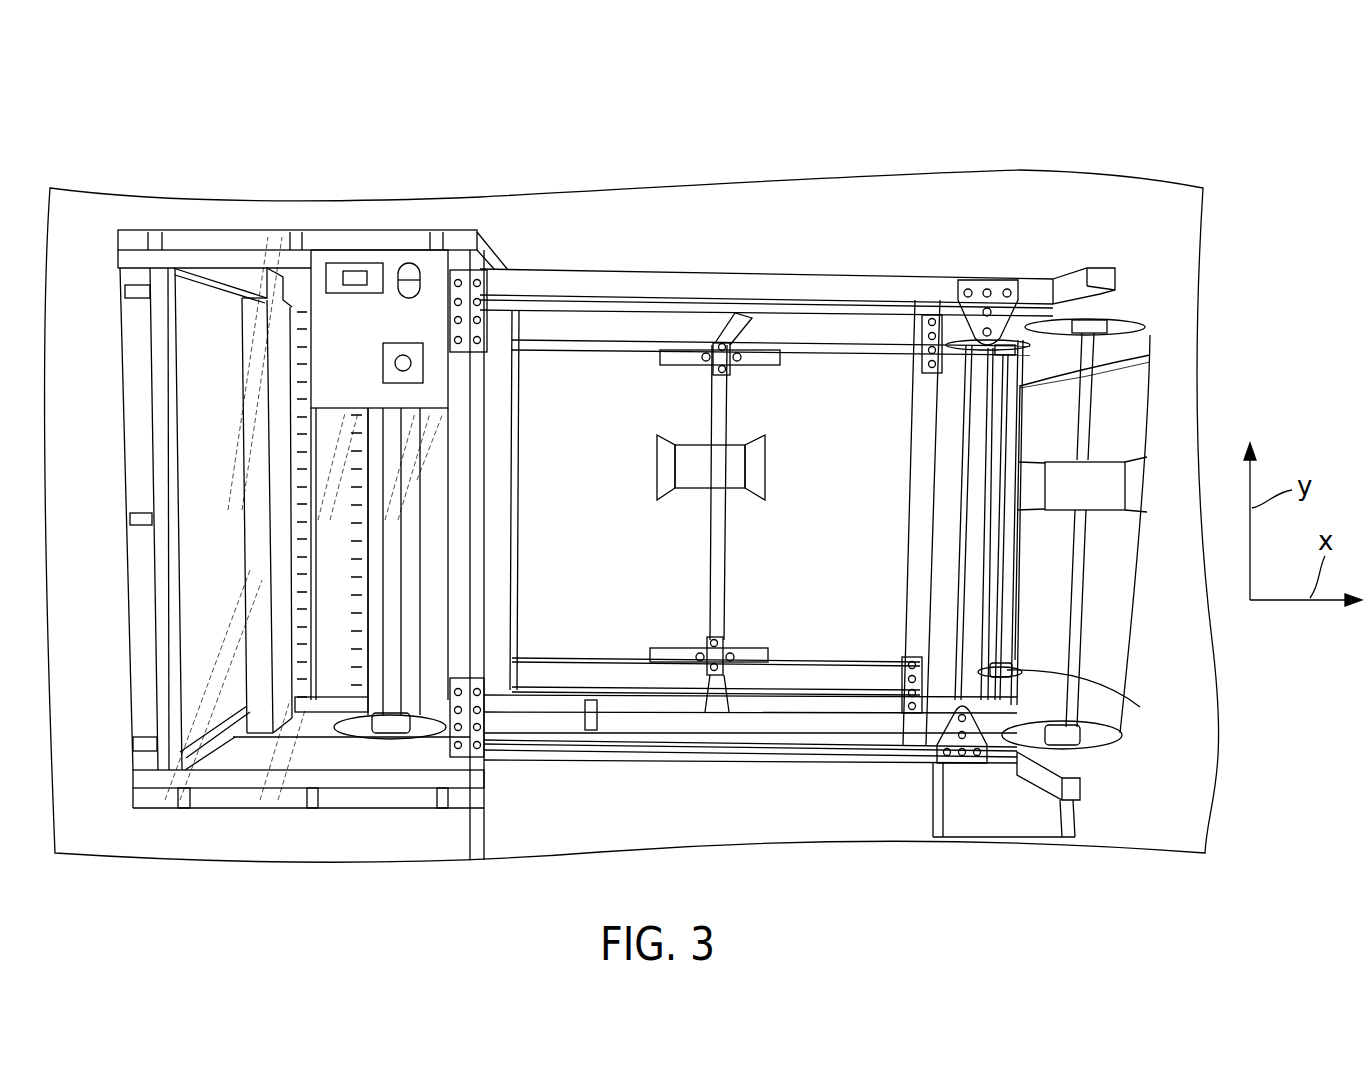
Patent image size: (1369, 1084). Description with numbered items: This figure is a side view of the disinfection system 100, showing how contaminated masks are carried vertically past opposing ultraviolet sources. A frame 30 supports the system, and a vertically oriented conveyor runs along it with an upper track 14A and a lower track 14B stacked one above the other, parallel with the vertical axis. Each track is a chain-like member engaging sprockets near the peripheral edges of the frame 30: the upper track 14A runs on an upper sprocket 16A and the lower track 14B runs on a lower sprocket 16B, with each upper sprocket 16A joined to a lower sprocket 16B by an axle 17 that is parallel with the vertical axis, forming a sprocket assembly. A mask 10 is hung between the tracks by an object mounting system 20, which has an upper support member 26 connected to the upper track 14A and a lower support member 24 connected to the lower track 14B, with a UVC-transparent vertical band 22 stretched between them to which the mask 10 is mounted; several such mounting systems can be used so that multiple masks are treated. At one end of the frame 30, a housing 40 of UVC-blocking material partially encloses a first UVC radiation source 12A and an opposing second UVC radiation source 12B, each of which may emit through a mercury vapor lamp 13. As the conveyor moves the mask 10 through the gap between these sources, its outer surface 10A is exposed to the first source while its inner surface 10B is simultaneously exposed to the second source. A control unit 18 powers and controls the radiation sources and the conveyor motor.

The disinfection system 100 is at (166, 133).
The control unit 18 is at (390, 250).
The frame 30 is at (873, 290).
The upper track 14A is at (900, 300).
The lower track 14B is at (612, 657).
The upper sprocket 16A is at (1120, 323).
The lower sprocket 16B is at (1020, 675).
The vertical band 22 is at (1023, 392).
The upper support member 26 is at (752, 357).
The object mounting system 20 is at (738, 635).
The lower support member 24 is at (726, 662).
The first UVC radiation source 12A is at (266, 513).
The second UVC radiation source 12B is at (375, 603).
The mercury vapor lamp 13 is at (300, 548).
The axle 17 is at (395, 683).
The mask 10 is at (897, 534).
The outer surface 10A is at (1087, 495).
The inner surface 10B is at (680, 498).
The housing 40 is at (155, 780).